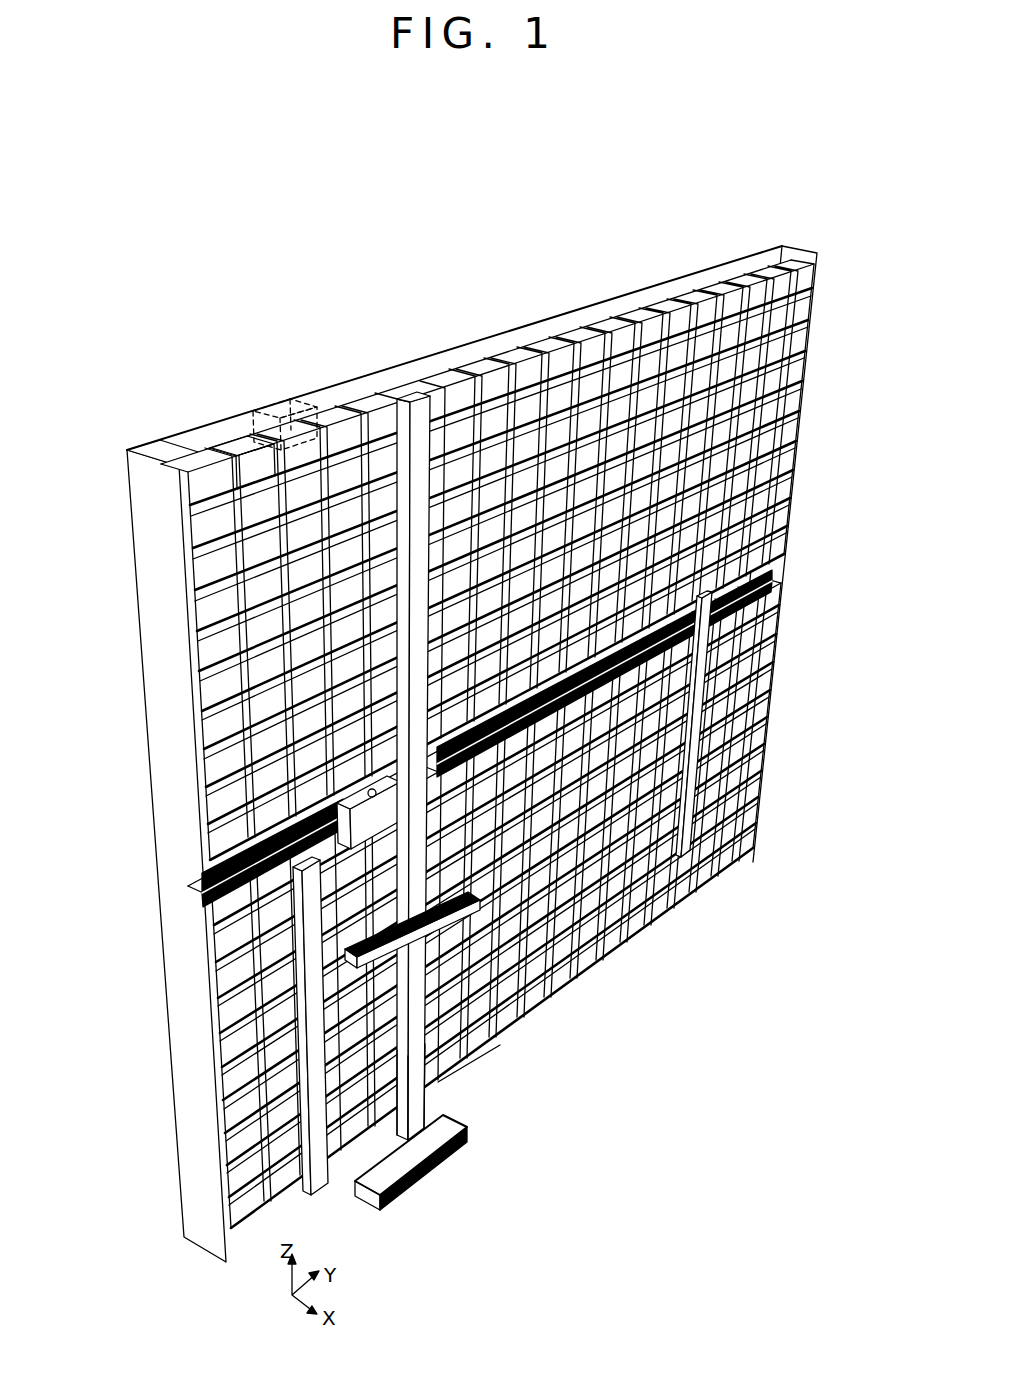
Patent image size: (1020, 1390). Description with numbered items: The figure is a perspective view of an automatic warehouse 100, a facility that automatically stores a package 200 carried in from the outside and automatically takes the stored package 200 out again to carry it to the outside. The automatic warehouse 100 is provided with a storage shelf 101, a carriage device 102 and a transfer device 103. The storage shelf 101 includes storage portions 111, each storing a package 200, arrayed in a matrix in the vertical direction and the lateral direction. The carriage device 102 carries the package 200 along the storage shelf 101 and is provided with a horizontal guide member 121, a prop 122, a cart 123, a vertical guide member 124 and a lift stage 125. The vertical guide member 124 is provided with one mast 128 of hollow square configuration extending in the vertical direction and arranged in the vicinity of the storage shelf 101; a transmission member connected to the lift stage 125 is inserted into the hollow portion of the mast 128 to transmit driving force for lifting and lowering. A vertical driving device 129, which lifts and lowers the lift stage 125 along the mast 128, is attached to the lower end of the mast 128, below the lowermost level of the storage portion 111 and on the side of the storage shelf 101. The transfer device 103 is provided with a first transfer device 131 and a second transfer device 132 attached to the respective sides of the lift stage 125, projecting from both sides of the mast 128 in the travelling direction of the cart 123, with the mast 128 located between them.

The automatic warehouse 100 is at (472, 691).
The storage shelf 101 is at (533, 318).
The carriage device 102 is at (487, 560).
The transfer device 103 is at (484, 902).
The storage portion 111 is at (300, 410).
The horizontal guide member 121 is at (778, 585).
The prop 122 is at (700, 862).
The cart 123 is at (338, 808).
The vertical guide member 124 is at (410, 396).
The lift stage 125 is at (470, 1040).
The mast 128 is at (412, 1075).
The vertical driving device 129 is at (425, 1168).
The first transfer device 131 is at (358, 952).
The second transfer device 132 is at (560, 957).
The package 200 is at (245, 432).